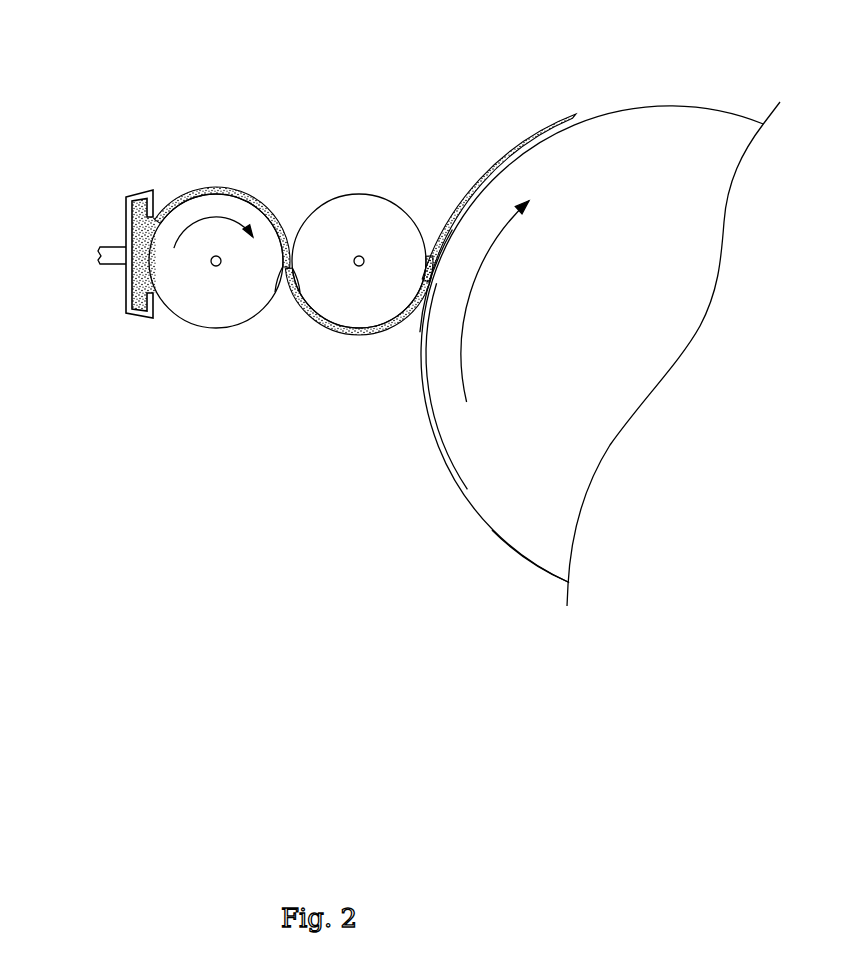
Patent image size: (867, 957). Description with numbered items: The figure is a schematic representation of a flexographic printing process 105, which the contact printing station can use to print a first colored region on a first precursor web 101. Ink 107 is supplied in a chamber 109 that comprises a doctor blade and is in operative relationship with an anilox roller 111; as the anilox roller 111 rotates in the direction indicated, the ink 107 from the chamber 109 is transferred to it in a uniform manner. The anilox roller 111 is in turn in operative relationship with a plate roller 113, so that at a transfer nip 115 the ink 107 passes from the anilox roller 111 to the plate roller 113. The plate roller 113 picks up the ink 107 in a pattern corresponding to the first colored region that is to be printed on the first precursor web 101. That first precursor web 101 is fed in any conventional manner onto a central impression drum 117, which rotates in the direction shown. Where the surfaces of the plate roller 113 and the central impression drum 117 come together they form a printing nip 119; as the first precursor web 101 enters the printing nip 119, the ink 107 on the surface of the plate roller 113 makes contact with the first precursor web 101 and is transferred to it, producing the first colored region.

The first precursor web 101 is at (445, 472).
The flexographic printing process 105 is at (345, 86).
The ink 107 is at (135, 230).
The chamber 109 is at (122, 318).
The anilox roller 111 is at (215, 203).
The plate roller 113 is at (368, 222).
The transfer nip 115 is at (284, 293).
The central impression drum 117 is at (537, 570).
The printing nip 119 is at (403, 337).